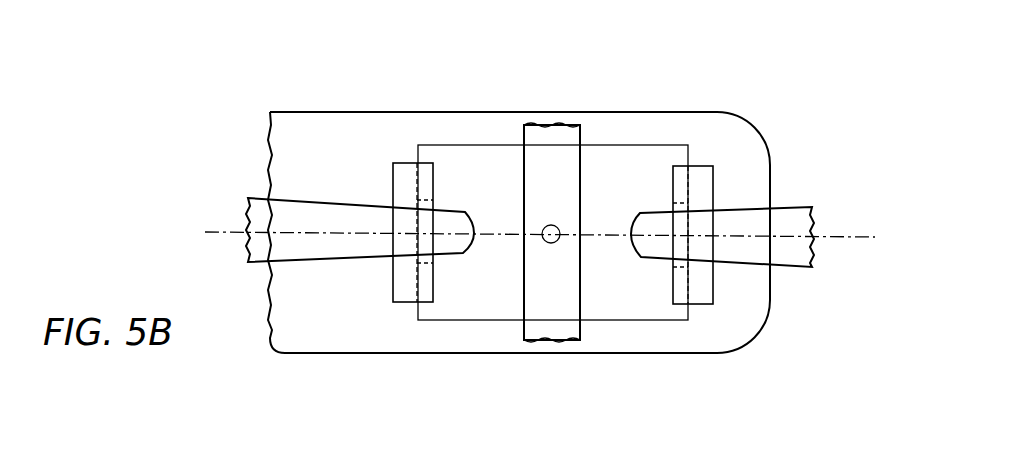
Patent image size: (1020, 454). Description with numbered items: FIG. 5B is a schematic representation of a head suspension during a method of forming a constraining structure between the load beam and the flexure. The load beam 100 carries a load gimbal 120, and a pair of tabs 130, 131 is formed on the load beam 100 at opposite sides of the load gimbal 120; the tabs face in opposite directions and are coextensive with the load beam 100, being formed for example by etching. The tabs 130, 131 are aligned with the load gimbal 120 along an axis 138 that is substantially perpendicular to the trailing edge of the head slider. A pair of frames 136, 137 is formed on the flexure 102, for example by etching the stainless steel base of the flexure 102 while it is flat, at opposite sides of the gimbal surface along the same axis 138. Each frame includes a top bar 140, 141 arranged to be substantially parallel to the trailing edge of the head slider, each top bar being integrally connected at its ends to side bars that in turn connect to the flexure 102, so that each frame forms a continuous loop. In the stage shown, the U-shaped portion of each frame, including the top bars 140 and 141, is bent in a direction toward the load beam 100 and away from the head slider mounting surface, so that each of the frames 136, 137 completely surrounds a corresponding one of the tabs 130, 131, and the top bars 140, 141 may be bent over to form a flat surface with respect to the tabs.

The load beam 100 is at (580, 340).
The flexure 102 is at (358, 112).
The load gimbal 120 is at (551, 243).
The tab 130 is at (465, 212).
The tab 131 is at (640, 212).
The frame 136 is at (402, 302).
The frame 137 is at (700, 304).
The axis 138 is at (862, 237).
The top bar 140 is at (393, 177).
The top bar 141 is at (713, 176).